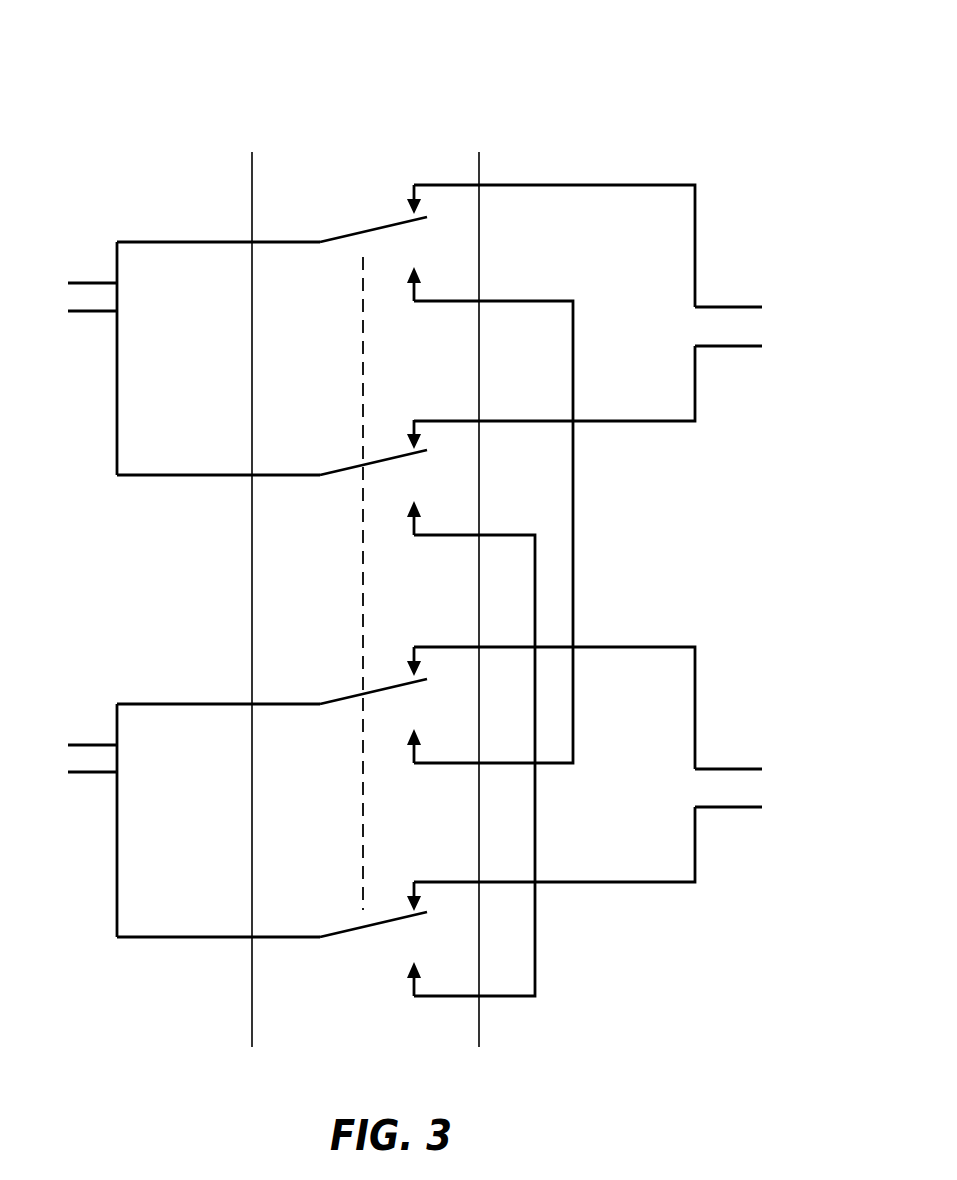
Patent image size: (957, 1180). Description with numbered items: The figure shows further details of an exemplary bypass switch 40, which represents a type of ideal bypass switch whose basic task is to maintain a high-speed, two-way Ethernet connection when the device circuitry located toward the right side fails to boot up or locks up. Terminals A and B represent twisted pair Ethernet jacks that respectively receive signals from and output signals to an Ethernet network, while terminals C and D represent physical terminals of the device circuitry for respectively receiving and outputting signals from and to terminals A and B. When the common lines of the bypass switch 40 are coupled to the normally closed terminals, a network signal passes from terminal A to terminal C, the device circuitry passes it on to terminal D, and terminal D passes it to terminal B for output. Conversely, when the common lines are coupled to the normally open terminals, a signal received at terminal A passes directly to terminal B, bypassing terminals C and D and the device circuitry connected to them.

The bypass switch 40 is at (488, 111).
The terminal A is at (68, 358).
The terminal B is at (69, 820).
The terminal C is at (746, 326).
The terminal D is at (747, 788).